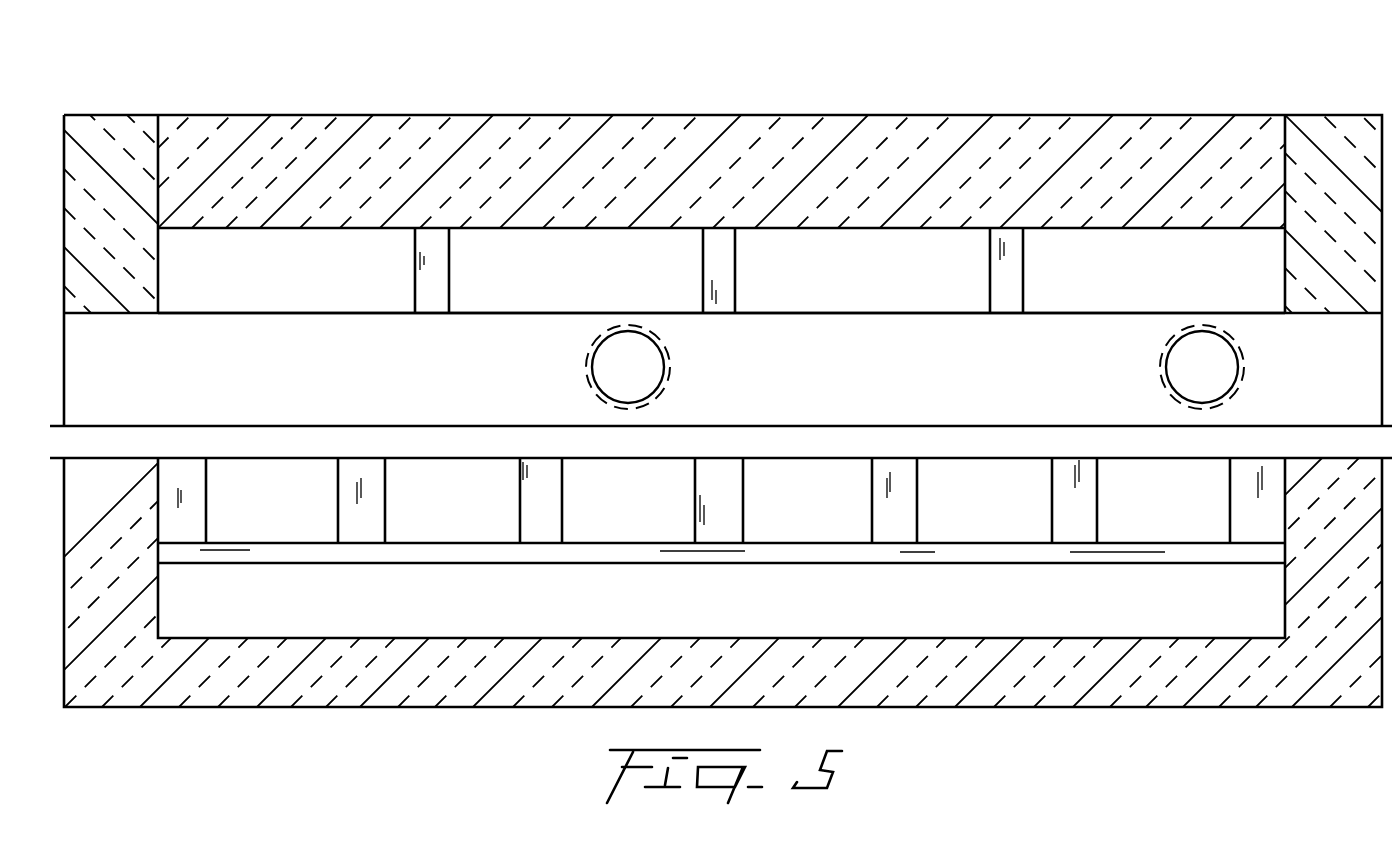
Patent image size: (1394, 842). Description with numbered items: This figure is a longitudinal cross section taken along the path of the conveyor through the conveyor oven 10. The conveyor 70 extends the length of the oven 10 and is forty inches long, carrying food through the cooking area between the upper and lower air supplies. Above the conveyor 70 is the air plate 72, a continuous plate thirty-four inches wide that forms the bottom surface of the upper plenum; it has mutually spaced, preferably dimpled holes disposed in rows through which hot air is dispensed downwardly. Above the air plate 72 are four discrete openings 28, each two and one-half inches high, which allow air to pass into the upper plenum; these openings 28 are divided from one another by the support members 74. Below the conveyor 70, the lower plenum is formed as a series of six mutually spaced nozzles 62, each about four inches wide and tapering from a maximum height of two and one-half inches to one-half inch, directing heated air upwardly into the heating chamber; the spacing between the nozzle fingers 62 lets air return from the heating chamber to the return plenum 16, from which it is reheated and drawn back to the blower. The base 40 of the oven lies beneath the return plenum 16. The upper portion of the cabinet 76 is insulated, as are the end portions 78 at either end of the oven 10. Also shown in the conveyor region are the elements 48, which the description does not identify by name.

The conveyor oven 10 is at (800, 88).
The return plenum 16 is at (756, 638).
The opening 28 is at (367, 285).
The base 40 is at (1143, 707).
The conveyor rollers 48 is at (667, 369).
The nozzles 62 is at (288, 538).
The conveyor 70 is at (850, 422).
The air plate 72 is at (373, 313).
The support members 74 is at (448, 264).
The upper portion of the cabinet 76 is at (536, 128).
The end portions 78 is at (108, 125).